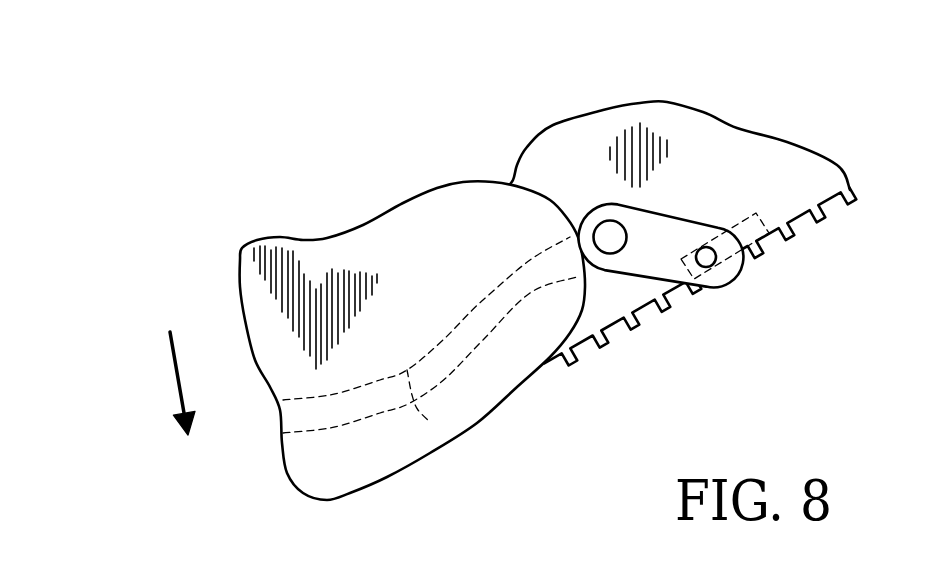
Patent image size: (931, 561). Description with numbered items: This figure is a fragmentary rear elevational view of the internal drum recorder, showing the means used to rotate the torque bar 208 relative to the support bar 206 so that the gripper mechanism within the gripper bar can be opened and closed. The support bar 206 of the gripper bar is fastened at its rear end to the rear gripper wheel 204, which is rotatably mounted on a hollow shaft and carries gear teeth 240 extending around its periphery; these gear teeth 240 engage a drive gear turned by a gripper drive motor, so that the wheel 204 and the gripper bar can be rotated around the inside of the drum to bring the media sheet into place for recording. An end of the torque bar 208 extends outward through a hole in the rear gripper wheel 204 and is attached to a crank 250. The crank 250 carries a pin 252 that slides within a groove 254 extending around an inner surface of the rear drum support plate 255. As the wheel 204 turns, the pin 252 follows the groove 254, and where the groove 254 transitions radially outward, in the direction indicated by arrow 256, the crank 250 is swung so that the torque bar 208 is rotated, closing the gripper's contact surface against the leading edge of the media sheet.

The rear gripper wheel 204 is at (600, 172).
The support bar 206 is at (777, 213).
The torque bar 208 is at (706, 247).
The gear teeth 240 is at (779, 253).
The crank 250 is at (577, 237).
The pin 252 is at (626, 246).
The groove 254 is at (437, 423).
The rear drum support plate 255 is at (412, 308).
The arrow 256 is at (175, 377).